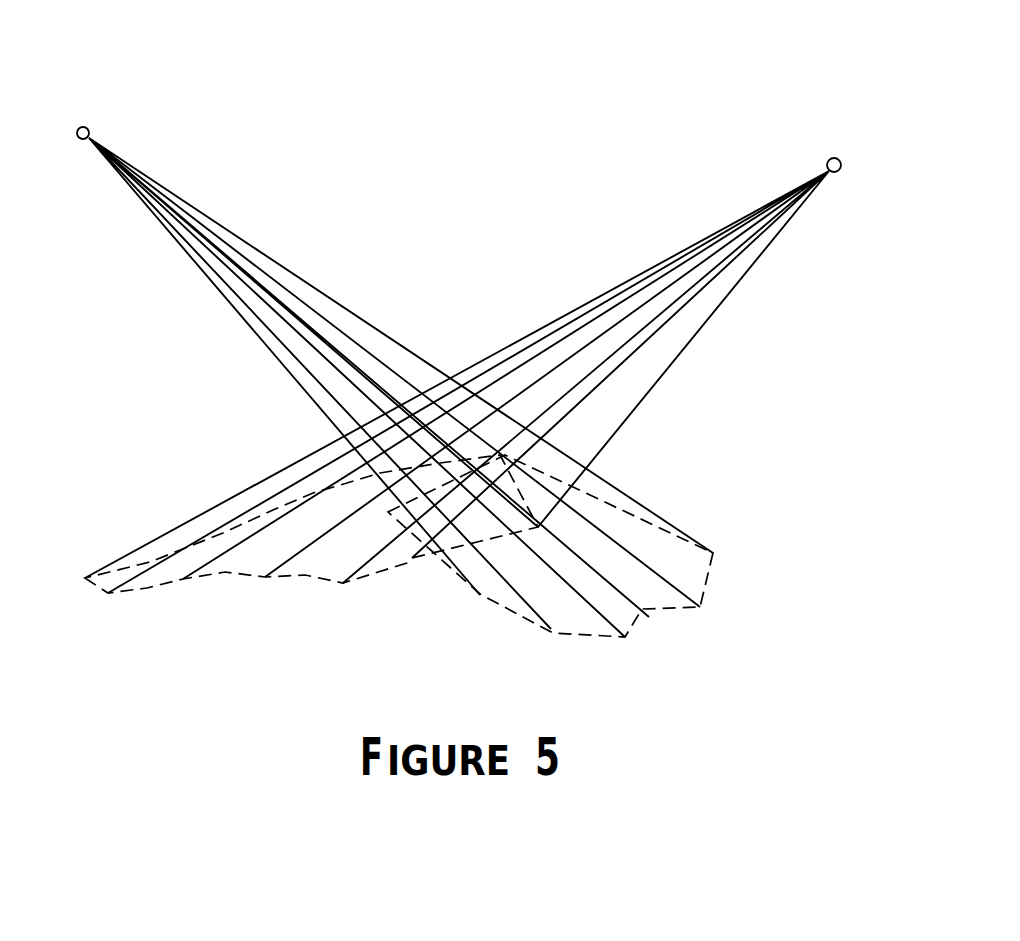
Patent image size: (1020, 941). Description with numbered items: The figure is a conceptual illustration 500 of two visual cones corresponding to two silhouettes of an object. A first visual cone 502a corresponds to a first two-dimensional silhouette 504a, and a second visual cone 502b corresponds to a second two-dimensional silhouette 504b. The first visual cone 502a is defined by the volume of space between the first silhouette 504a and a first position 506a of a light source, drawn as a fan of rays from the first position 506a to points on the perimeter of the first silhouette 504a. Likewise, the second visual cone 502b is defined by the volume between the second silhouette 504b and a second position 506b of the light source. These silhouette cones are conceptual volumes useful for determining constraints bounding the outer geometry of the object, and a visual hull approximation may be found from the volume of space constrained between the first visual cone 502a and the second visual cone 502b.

The conceptual illustration 500 is at (230, 77).
The first visual cone 502a is at (194, 309).
The second visual cone 502b is at (740, 335).
The first 2D silhouette 504a is at (606, 635).
The second 2D silhouette 504b is at (247, 573).
The first position of light source 506a is at (76, 133).
The second position of light source 506b is at (830, 173).